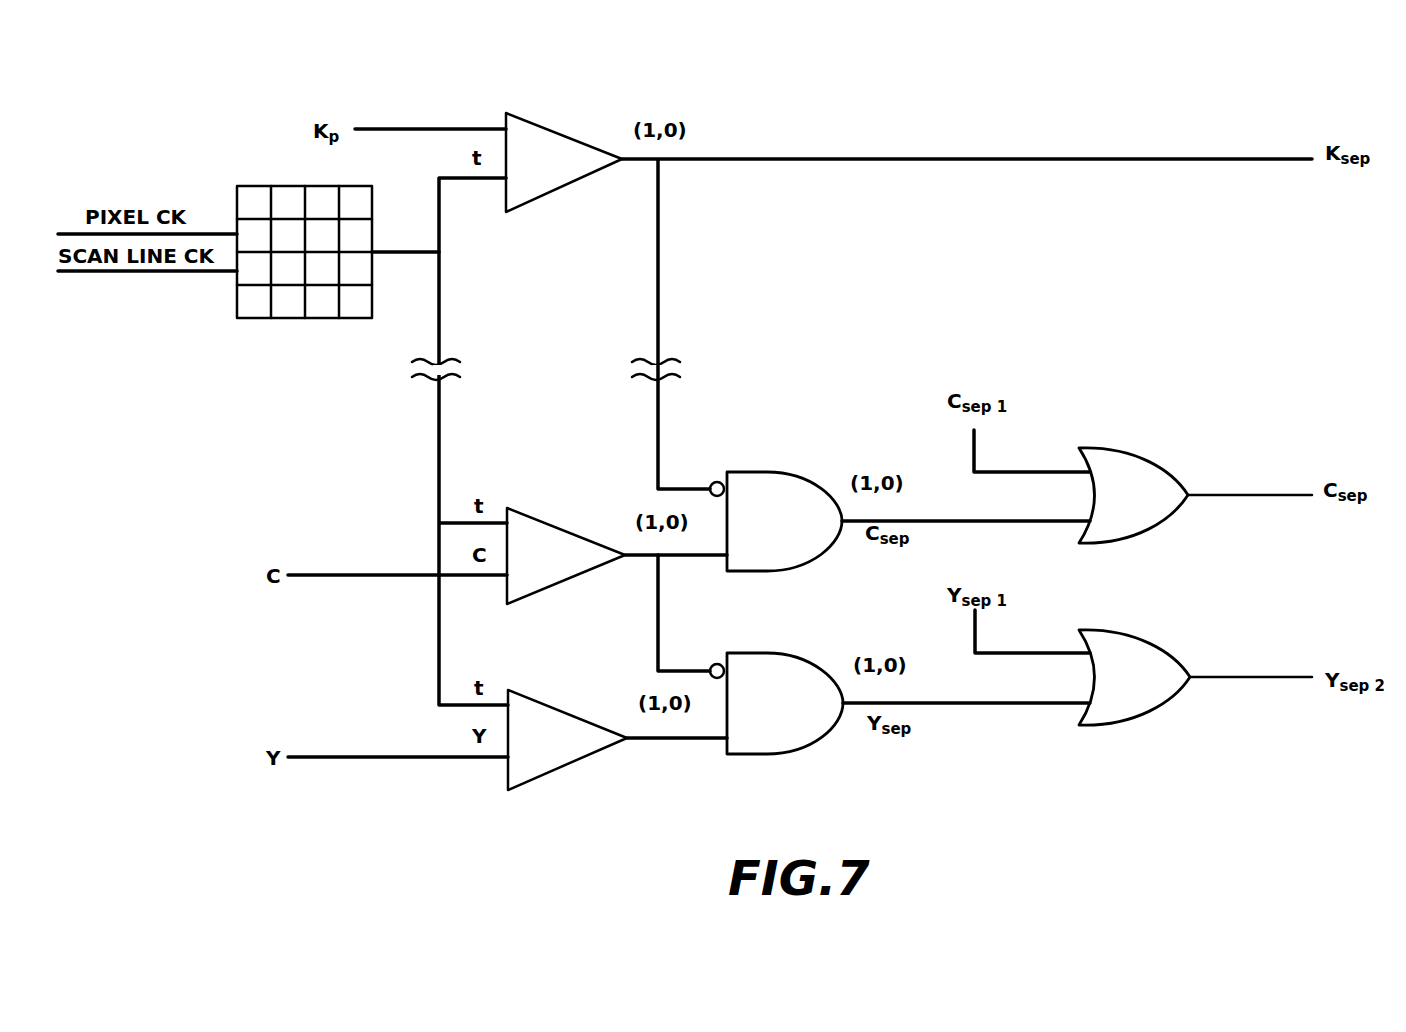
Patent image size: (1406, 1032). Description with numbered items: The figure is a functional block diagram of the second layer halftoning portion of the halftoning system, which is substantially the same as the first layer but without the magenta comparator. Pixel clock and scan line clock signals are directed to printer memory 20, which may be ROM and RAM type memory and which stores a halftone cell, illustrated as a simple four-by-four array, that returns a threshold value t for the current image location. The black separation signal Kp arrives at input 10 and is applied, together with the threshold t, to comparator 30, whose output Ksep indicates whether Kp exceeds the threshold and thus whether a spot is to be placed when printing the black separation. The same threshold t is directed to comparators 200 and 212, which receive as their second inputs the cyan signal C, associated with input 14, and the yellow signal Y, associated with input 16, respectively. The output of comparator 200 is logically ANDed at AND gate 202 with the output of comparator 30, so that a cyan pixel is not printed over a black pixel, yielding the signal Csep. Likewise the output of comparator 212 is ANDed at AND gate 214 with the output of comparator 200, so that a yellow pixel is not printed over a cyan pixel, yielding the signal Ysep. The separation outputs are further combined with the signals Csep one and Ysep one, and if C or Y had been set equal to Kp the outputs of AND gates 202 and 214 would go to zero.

The input 10 is at (418, 128).
The printer memory 20 is at (252, 184).
The comparator 30 is at (569, 137).
The input 14 is at (331, 574).
The input 16 is at (333, 756).
The comparator 200 is at (568, 531).
The AND gate 202 is at (795, 473).
The comparator 212 is at (573, 713).
The AND gate 214 is at (797, 655).